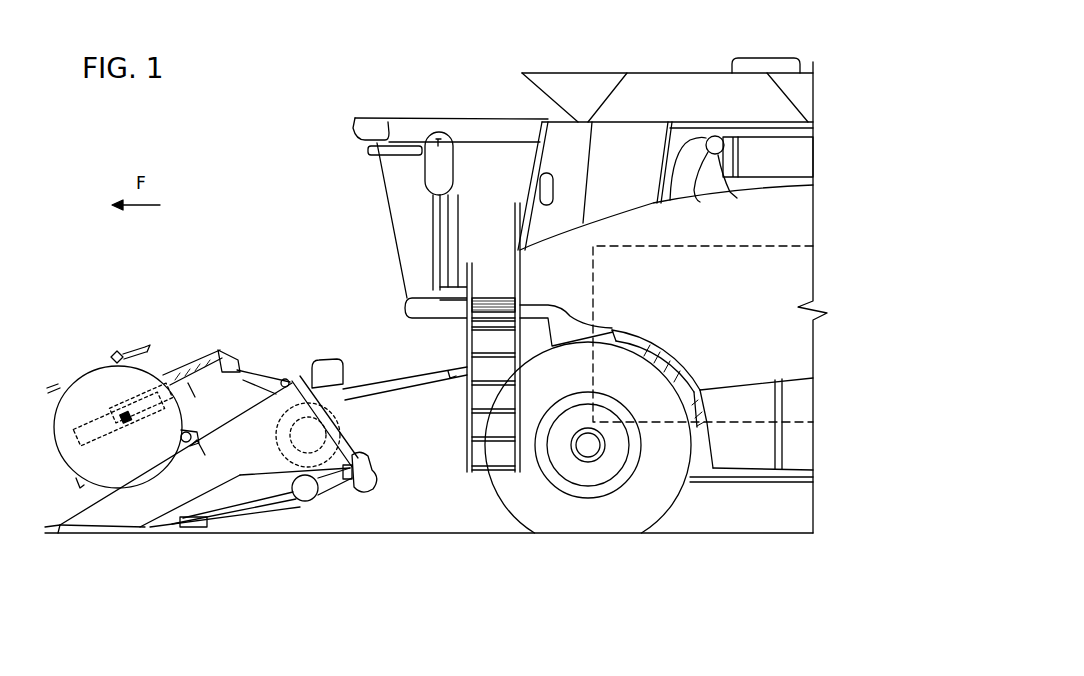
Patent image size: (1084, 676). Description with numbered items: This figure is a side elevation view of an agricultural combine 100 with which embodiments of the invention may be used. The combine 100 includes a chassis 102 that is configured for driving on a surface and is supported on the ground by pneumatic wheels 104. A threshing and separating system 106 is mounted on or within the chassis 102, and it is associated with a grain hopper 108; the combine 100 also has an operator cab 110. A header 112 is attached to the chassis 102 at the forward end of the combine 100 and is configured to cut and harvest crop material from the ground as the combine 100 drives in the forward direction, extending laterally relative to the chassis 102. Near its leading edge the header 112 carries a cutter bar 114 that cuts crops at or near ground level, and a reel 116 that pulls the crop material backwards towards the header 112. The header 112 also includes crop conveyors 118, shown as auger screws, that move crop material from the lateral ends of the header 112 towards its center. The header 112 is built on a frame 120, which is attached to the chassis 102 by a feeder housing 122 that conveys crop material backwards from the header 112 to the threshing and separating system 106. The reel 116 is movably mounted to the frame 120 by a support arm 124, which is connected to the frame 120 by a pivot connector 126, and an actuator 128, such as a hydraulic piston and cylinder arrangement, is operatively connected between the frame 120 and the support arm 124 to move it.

The agricultural combine 100 is at (345, 80).
The chassis 102 is at (727, 452).
The pneumatic wheels 104 is at (618, 513).
The threshing and separating system 106 is at (778, 243).
The grain hopper 108 is at (690, 88).
The operator cab 110 is at (497, 162).
The header 112 is at (258, 355).
The cutter bar 114 is at (185, 536).
The reel 116 is at (112, 348).
The crop conveyor 118 is at (333, 492).
The frame 120 is at (340, 382).
The feeder housing 122 is at (410, 437).
The support arm 124 is at (197, 352).
The pivot connector 126 is at (287, 378).
The actuator 128 is at (236, 366).